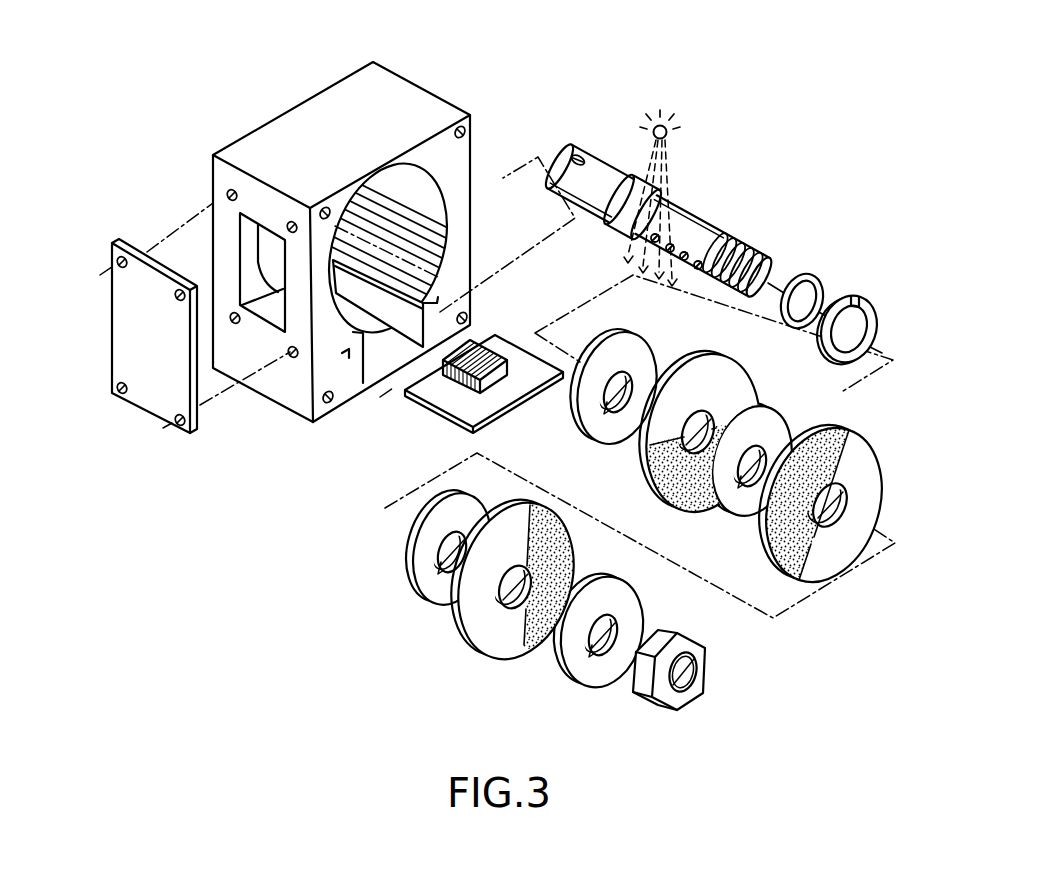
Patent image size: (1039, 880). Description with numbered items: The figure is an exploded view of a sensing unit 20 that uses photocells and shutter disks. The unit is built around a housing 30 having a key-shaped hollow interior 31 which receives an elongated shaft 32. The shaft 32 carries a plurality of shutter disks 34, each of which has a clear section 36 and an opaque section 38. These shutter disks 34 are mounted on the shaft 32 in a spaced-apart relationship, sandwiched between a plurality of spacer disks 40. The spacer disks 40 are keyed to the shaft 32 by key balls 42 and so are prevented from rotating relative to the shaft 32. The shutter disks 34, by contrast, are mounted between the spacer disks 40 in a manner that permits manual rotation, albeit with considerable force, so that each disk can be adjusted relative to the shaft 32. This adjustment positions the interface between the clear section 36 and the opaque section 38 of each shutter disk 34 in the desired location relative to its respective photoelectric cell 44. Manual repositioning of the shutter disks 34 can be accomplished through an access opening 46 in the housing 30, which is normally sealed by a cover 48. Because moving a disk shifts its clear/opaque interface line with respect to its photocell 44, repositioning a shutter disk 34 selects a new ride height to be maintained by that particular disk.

The sensing unit 20 is at (287, 90).
The housing 30 is at (235, 138).
The key-shaped hollow interior 31 is at (430, 217).
The elongated shaft 32 is at (700, 225).
The shutter disk 34 is at (750, 364).
The clear section 36 is at (717, 380).
The opaque section 38 is at (552, 520).
The spacer disk 40 is at (600, 352).
The key ball 42 is at (668, 134).
The photoelectric cell 44 is at (495, 352).
The access opening 46 is at (275, 258).
The cover 48 is at (203, 433).